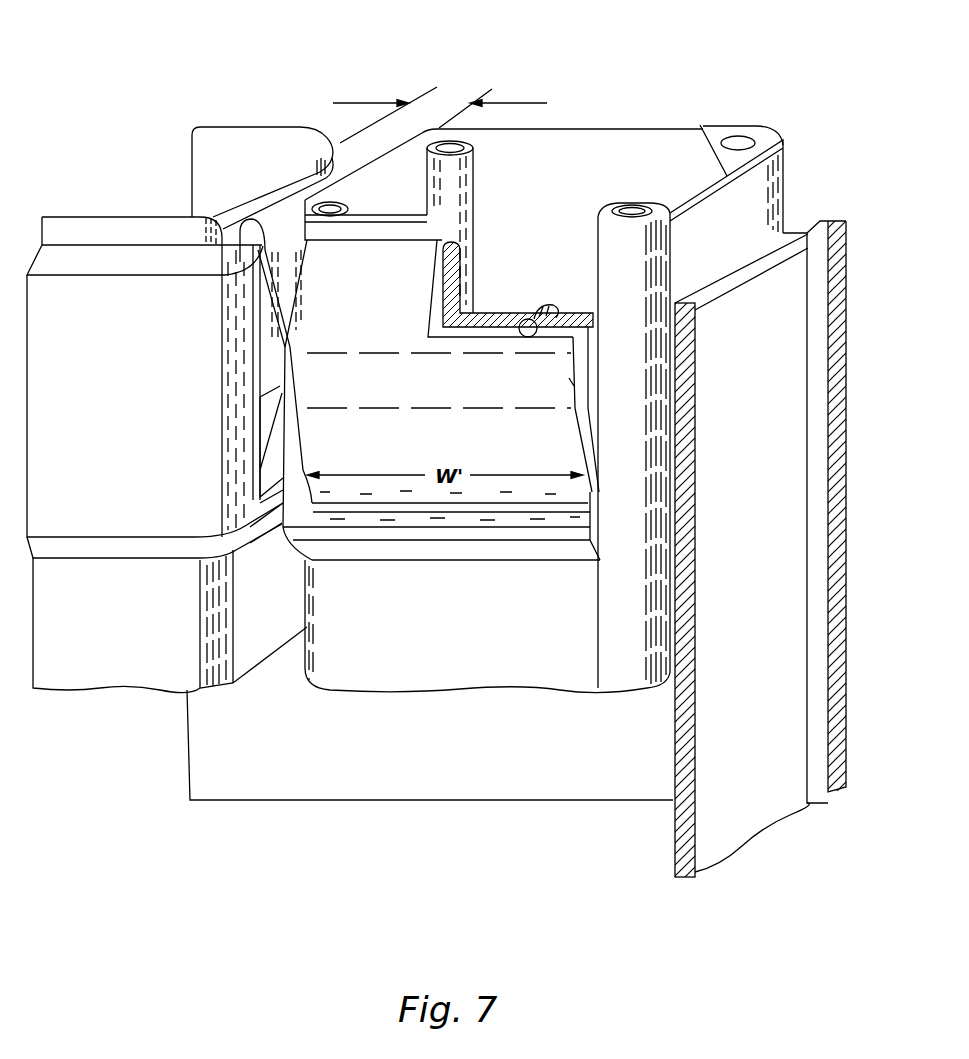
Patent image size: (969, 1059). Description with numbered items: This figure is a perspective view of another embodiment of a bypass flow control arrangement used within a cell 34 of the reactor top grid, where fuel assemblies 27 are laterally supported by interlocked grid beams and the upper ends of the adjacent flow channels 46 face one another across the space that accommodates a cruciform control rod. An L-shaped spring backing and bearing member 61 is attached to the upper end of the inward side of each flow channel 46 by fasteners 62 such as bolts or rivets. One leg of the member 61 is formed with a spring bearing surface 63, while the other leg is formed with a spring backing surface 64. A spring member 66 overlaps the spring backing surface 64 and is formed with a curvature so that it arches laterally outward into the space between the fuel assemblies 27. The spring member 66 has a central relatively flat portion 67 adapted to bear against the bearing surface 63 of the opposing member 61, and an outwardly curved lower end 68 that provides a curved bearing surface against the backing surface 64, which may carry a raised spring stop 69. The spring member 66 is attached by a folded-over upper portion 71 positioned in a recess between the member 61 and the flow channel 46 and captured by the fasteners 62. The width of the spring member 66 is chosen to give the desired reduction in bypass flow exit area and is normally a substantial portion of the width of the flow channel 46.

The cell 34 is at (559, 348).
The fuel assembly 27 is at (532, 162).
The flow channel 46 is at (697, 118).
The folded-over upper portion 71 is at (460, 275).
The fastener 62 is at (538, 318).
The spring member 66 is at (298, 349).
The central relatively flat portion 67 is at (573, 384).
The spring backing surface 64 is at (590, 438).
The outwardly curved lower end 68 is at (592, 492).
The spring backing and bearing member 61 is at (598, 531).
The raised spring stop 69 is at (557, 545).
The spring bearing surface 63 is at (128, 443).